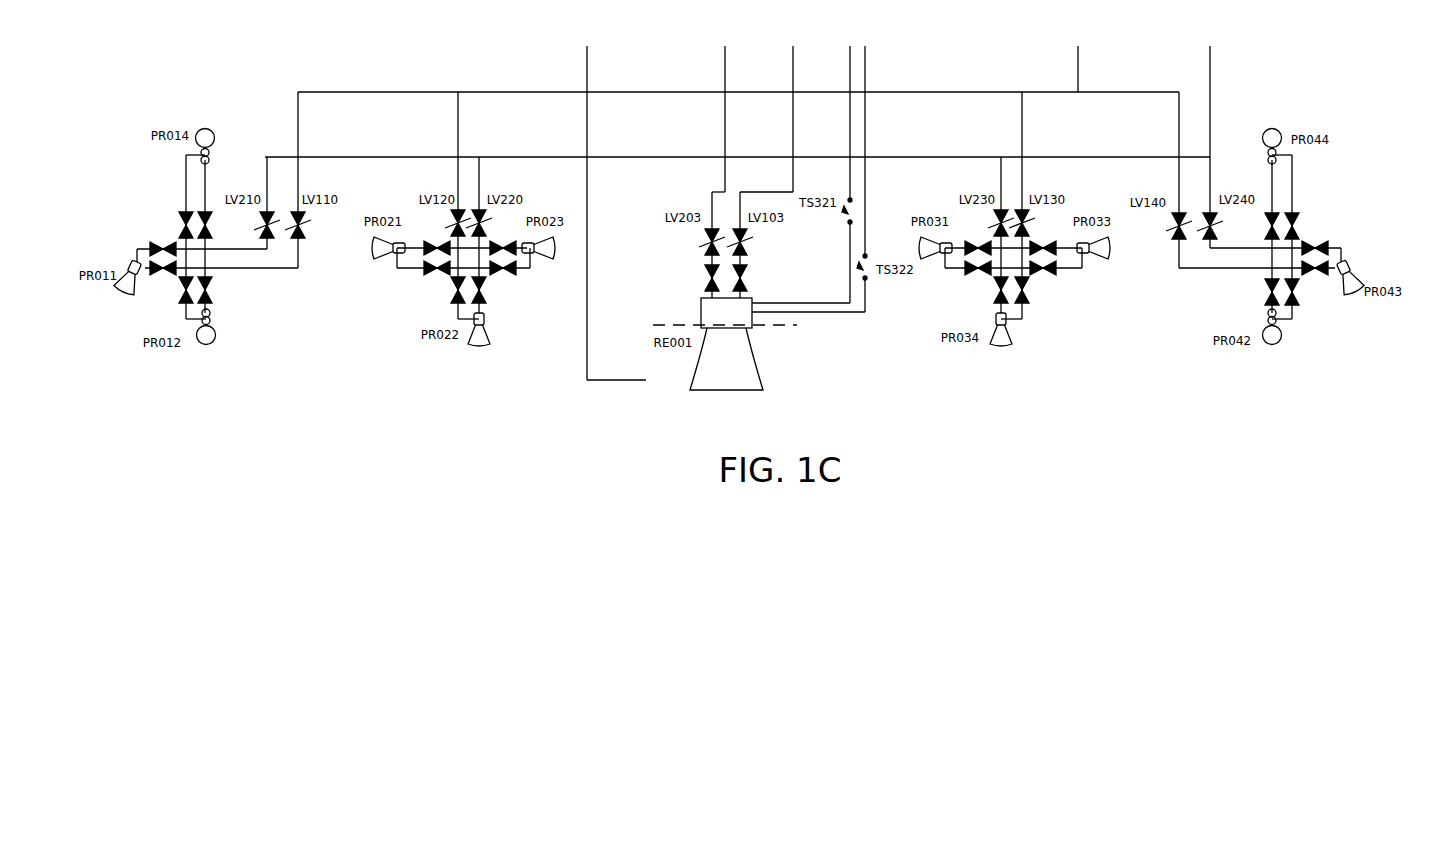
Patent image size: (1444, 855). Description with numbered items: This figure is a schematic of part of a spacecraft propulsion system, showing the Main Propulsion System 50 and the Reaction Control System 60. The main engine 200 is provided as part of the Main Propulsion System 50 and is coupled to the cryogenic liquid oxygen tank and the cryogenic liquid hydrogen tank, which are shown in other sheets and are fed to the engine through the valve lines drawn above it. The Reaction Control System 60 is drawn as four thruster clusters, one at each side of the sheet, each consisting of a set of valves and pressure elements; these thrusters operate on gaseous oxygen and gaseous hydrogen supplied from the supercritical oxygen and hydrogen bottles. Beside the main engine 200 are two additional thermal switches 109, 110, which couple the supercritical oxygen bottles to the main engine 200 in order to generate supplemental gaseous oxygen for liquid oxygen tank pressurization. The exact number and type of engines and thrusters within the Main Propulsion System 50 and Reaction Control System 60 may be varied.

The Main Propulsion System 50 is at (654, 233).
The Reaction Control System 60 is at (209, 290).
The thermal switch 109 is at (843, 215).
The thermal switch 110 is at (858, 275).
The main engine 200 is at (757, 352).